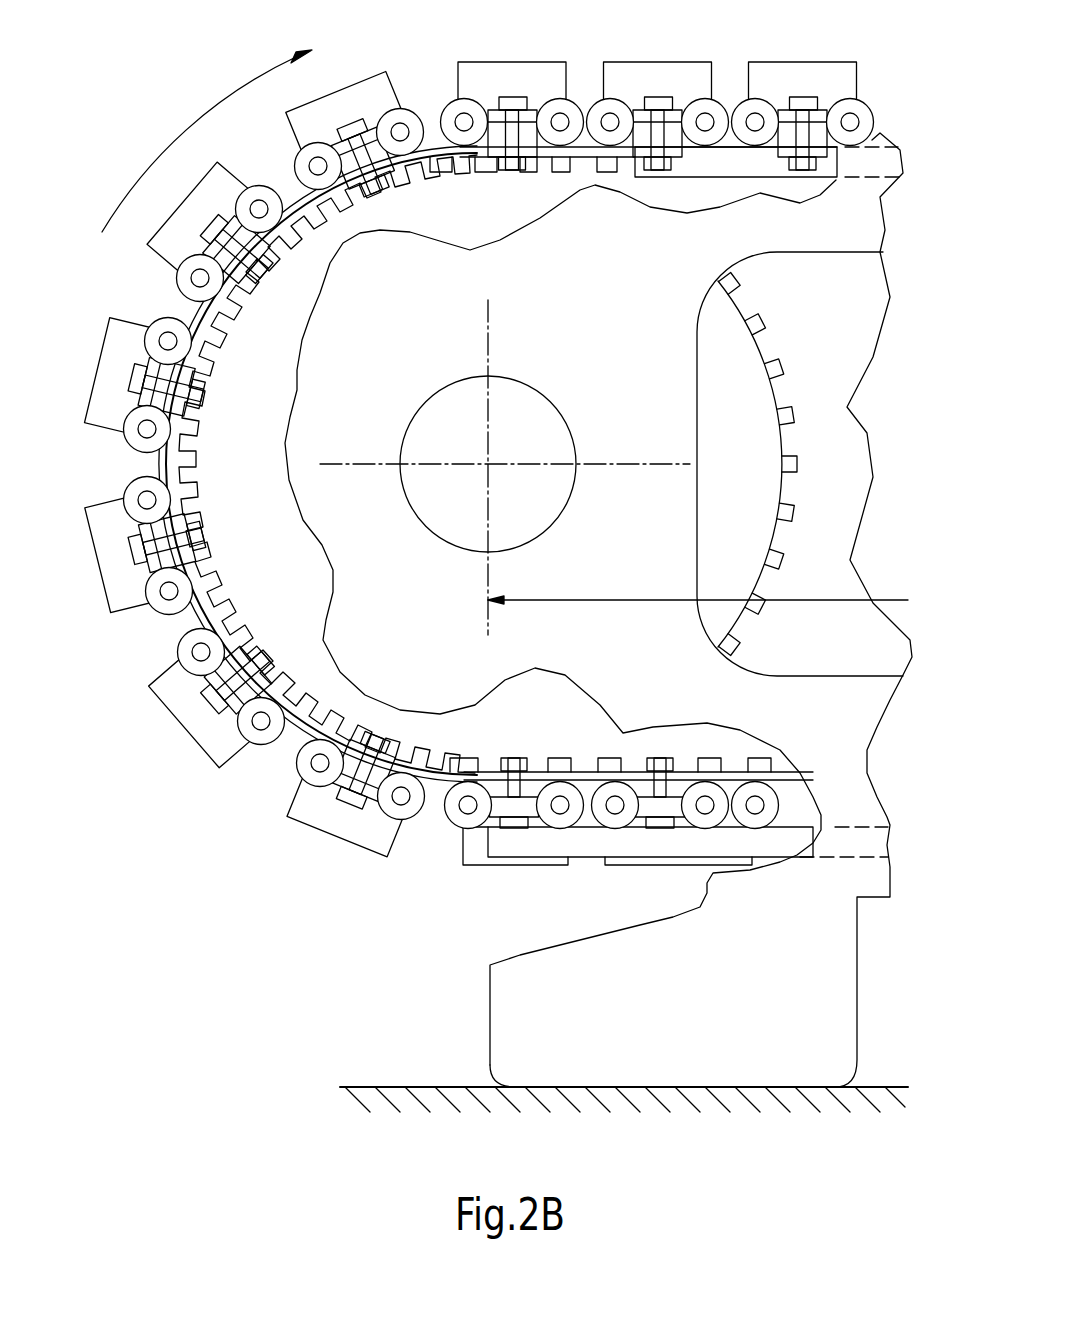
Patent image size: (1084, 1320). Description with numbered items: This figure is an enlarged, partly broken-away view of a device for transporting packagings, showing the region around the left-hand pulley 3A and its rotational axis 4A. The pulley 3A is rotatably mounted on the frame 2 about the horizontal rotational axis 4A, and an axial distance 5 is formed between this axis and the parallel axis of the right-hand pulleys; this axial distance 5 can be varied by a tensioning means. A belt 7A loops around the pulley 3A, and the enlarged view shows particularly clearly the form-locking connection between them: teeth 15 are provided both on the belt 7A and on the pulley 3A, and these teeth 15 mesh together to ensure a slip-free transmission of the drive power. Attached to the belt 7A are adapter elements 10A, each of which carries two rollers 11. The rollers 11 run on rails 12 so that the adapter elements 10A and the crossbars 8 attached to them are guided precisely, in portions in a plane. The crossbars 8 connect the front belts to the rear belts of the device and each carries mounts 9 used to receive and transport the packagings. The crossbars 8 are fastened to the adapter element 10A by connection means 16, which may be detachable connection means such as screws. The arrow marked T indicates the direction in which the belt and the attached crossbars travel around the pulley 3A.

The frame 2 is at (300, 725).
The pulley 3A is at (737, 363).
The rotational axis 4A is at (488, 464).
The axial distance 5 is at (698, 587).
The belt 7A is at (445, 768).
The crossbar 8 is at (788, 112).
The mount 9 is at (832, 82).
The adapter element 10A is at (668, 125).
The roller 11 is at (460, 112).
The rail 12 is at (670, 163).
The teeth 15 is at (790, 462).
The connection means 16 is at (360, 165).
The direction of travel T is at (207, 141).